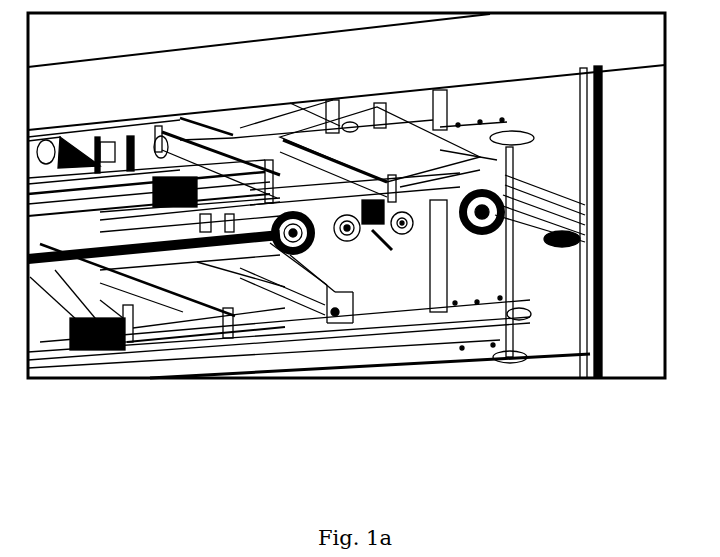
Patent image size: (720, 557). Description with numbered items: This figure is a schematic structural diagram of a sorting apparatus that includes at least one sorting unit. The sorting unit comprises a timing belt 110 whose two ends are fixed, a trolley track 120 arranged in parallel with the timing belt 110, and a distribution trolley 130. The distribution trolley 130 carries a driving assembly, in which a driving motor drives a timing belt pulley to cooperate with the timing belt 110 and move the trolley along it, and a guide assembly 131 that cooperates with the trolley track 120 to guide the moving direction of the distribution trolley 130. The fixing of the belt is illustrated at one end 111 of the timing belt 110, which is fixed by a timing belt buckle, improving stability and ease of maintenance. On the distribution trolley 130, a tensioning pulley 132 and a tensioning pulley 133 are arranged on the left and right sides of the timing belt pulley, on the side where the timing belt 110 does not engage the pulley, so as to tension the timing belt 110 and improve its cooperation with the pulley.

The timing belt 110 is at (412, 227).
The end of the timing belt 111 is at (562, 239).
The trolley track 120 is at (537, 133).
The distribution trolley 130 is at (292, 162).
The guide assembly 131 is at (298, 248).
The tensioning pulley 132 is at (410, 230).
The tensioning pulley 133 is at (355, 236).